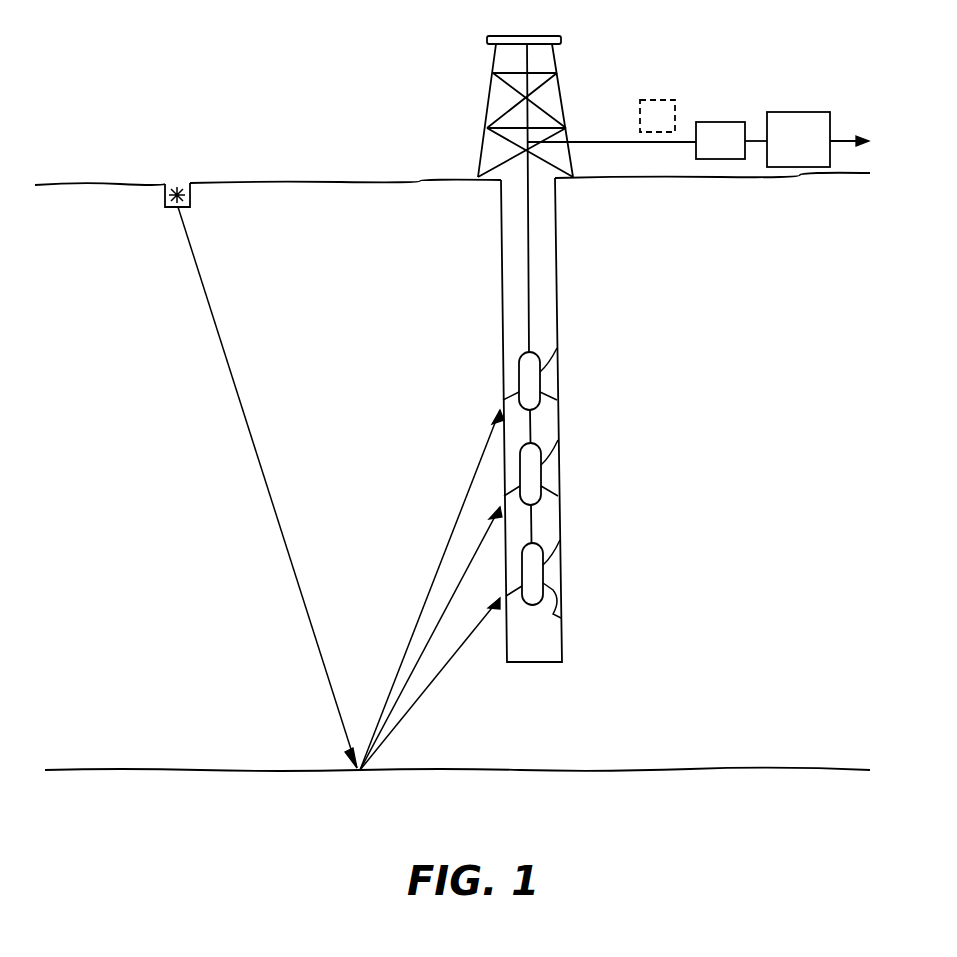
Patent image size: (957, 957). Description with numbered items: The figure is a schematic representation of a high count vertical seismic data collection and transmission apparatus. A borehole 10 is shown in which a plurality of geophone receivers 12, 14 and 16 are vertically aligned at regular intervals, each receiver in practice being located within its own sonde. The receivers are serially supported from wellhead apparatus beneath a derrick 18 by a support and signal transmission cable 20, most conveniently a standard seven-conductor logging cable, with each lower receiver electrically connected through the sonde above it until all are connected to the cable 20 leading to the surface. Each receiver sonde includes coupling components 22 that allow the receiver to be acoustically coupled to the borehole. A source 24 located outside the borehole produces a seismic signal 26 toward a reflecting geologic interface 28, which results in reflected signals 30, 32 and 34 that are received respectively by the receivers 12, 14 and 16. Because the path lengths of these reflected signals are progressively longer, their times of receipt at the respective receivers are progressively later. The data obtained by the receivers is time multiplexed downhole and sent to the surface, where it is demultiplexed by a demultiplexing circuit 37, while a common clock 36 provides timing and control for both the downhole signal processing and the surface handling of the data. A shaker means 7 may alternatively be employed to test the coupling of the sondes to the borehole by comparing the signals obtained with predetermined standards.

The shaker means 7 is at (664, 99).
The borehole 10 is at (556, 268).
The geophone receiver 12 is at (562, 540).
The geophone receiver 14 is at (560, 440).
The geophone receiver 16 is at (559, 345).
The derrick 18 is at (562, 78).
The support and signal transmission cable 20 is at (528, 232).
The coupling components 22 is at (562, 618).
The source 24 is at (181, 184).
The seismic signal 26 is at (280, 510).
The reflecting geologic interface 28 is at (188, 770).
The reflected signal 30 is at (459, 650).
The reflected signal 32 is at (458, 585).
The reflected signal 34 is at (458, 517).
The common clock 36 is at (735, 122).
The demultiplexing circuit 37 is at (815, 112).